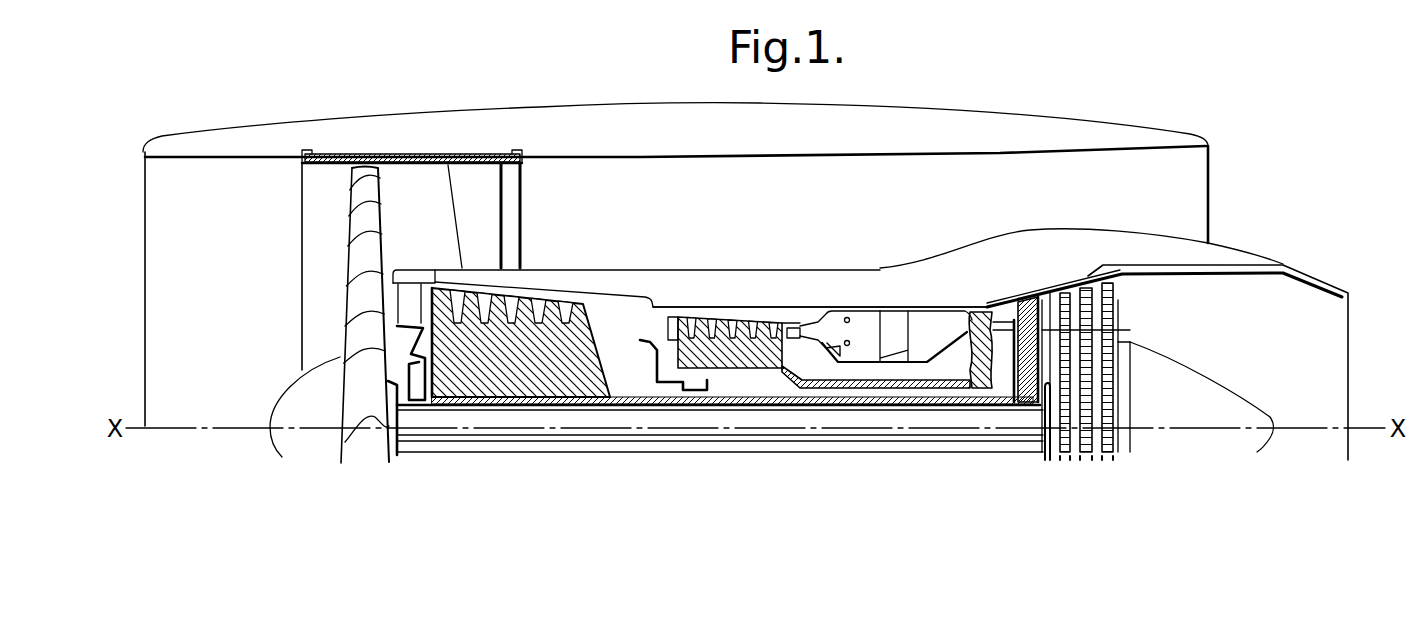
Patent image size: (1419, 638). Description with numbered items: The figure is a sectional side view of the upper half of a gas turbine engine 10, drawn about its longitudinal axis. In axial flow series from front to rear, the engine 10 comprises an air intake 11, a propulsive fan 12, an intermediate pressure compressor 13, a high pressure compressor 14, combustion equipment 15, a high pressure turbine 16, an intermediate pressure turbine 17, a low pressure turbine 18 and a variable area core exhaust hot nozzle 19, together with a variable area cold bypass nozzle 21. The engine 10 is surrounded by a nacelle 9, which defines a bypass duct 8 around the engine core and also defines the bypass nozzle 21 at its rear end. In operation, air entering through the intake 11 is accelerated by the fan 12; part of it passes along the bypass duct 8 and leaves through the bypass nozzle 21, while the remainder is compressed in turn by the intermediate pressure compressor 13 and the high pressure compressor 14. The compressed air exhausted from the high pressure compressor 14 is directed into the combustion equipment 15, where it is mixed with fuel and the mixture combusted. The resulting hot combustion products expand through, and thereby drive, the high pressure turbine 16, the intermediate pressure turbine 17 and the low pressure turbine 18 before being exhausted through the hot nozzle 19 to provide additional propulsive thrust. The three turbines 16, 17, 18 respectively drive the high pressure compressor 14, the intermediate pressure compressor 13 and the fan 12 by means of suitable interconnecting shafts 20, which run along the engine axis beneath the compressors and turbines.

The bypass duct 8 is at (626, 209).
The nacelle 9 is at (482, 105).
The gas turbine engine 10 is at (663, 210).
The air intake 11 is at (286, 260).
The propulsive fan 12 is at (365, 190).
The intermediate pressure compressor 13 is at (520, 352).
The high pressure compressor 14 is at (725, 312).
The combustion equipment 15 is at (897, 303).
The high pressure turbine 16 is at (975, 313).
The intermediate pressure turbine 17 is at (1032, 306).
The low pressure turbine 18 is at (1083, 290).
The variable area core exhaust hot nozzle 19 is at (1325, 347).
The interconnecting shafts 20 is at (884, 443).
The variable area cold bypass nozzle 21 is at (1200, 183).